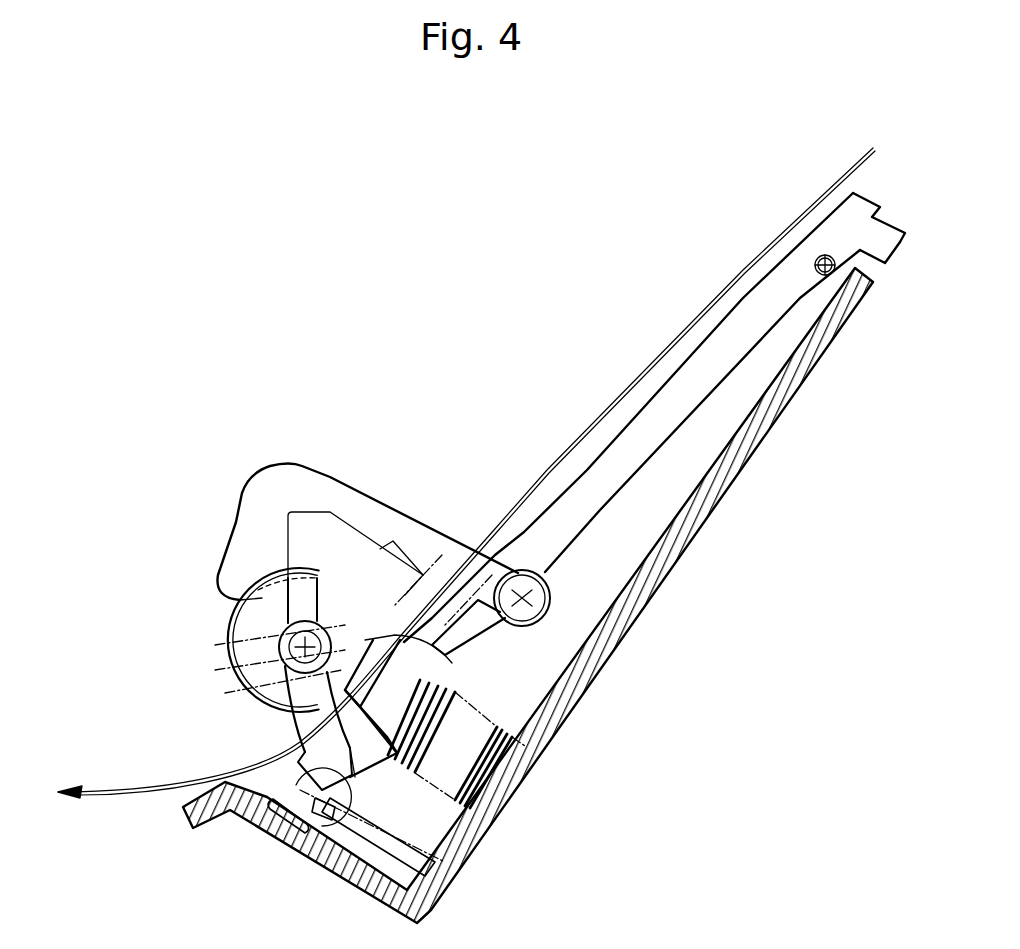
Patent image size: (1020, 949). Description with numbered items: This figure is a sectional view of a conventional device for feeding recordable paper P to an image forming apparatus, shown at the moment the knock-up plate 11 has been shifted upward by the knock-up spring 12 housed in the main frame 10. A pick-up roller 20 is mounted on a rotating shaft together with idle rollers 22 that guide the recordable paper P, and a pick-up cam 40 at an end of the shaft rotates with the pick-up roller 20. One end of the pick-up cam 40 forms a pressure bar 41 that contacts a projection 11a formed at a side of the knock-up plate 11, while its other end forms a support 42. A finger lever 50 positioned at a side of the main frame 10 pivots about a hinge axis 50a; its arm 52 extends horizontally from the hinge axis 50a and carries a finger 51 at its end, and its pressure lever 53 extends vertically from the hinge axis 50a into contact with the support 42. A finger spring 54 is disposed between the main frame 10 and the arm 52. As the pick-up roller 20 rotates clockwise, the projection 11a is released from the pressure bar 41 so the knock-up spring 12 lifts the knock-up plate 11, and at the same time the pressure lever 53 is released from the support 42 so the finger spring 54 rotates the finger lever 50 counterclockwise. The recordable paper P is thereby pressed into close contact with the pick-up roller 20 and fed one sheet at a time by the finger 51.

The recordable paper P is at (784, 230).
The main frame 10 is at (727, 477).
The knock-up plate 11 is at (700, 380).
The projection 11a is at (428, 667).
The knock-up spring 12 is at (490, 758).
The pick-up roller 20 is at (220, 697).
The idle rollers 22 is at (253, 627).
The pick-up cam 40 is at (288, 692).
The pressure bar 41 is at (310, 740).
The support 42 is at (297, 597).
The finger lever 50 is at (450, 522).
The hinge axis 50a is at (533, 592).
The finger 51 is at (275, 813).
The arm 52 is at (330, 840).
The pressure lever 53 is at (357, 507).
The finger spring 54 is at (383, 853).